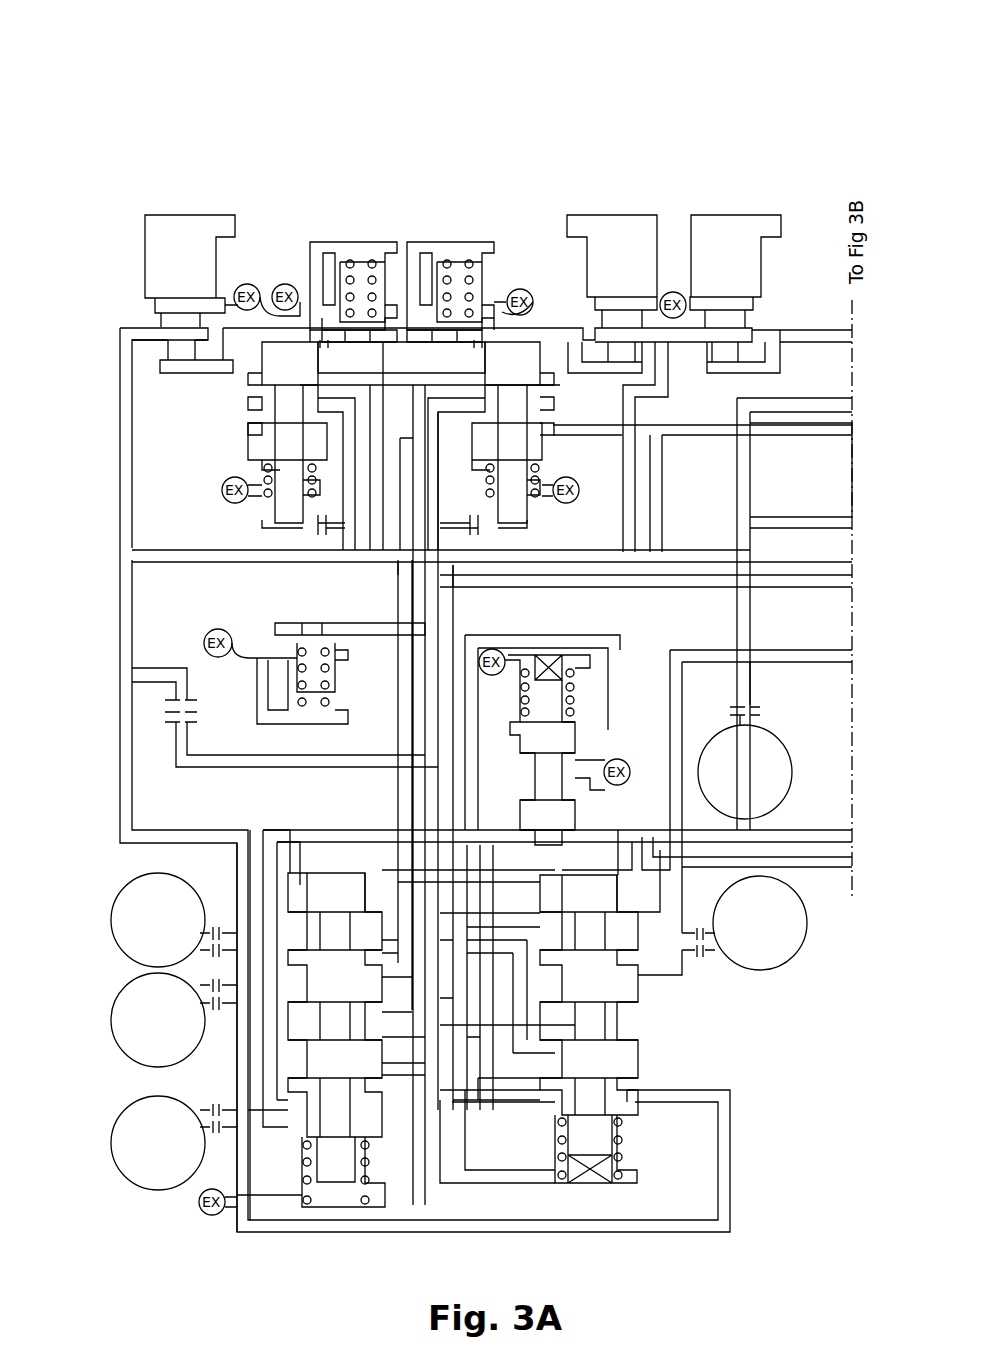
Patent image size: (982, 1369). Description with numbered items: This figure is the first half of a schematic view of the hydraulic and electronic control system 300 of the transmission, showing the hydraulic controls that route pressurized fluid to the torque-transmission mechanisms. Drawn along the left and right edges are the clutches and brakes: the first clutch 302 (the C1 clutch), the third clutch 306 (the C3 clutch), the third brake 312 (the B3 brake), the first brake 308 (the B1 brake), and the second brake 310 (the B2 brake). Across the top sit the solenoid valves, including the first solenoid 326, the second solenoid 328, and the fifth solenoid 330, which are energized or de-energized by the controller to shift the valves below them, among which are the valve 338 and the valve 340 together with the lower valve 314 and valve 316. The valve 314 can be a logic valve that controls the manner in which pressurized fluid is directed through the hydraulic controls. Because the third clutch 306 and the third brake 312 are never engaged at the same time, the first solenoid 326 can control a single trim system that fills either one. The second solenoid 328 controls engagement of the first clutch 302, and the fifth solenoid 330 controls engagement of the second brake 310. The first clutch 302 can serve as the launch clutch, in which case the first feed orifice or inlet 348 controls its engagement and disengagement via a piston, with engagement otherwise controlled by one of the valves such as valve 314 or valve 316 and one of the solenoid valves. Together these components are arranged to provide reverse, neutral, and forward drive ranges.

The hydraulic and electronic control system 300 is at (256, 126).
The first clutch (C1 clutch) 302 is at (158, 1185).
The third clutch (C3 clutch) 306 is at (108, 900).
The first brake (B1 brake) 308 is at (752, 958).
The second brake (B2 brake) 310 is at (795, 765).
The third brake (B3 brake) 312 is at (108, 1010).
The valve 314 is at (385, 1140).
The valve 316 is at (632, 1140).
The first solenoid valve 326 is at (185, 225).
The second solenoid valve 328 is at (617, 237).
The fifth solenoid valve 330 is at (727, 237).
The valve 338 is at (355, 255).
The valve 340 is at (440, 255).
The first feed orifice or inlet 348 is at (208, 1105).